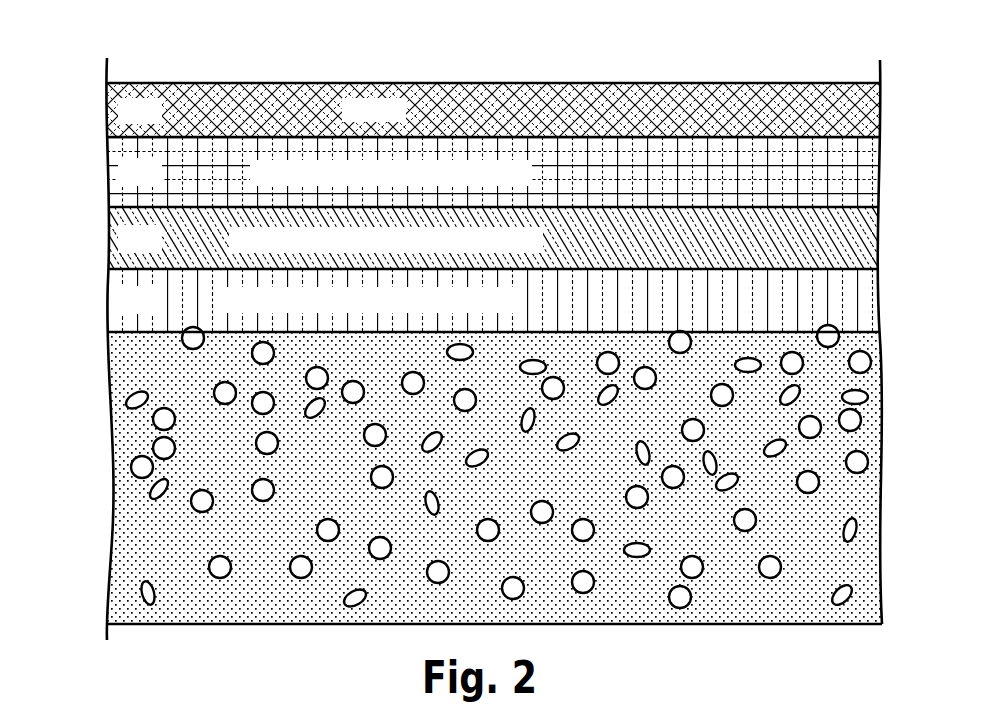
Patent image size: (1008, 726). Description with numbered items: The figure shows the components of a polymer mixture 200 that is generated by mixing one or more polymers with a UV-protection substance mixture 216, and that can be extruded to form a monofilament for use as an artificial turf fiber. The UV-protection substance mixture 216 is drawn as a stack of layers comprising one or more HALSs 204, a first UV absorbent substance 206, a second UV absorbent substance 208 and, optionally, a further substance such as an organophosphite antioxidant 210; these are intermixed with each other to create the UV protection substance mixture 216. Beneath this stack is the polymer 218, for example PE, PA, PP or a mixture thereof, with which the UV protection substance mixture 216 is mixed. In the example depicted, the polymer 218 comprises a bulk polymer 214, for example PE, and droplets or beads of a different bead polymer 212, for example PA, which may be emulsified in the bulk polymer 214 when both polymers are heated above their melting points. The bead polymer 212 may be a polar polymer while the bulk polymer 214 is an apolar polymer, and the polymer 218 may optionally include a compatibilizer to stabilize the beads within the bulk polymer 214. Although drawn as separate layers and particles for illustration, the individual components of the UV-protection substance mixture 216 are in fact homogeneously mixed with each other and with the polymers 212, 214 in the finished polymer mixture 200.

The polymer mixture 200 is at (460, 350).
The HALS 204 is at (157, 123).
The first UV absorbent substance 206 is at (157, 184).
The second UV absorbent substance 208 is at (157, 251).
The organophosphite antioxidant 210 is at (495, 300).
The bead polymer 212 is at (192, 620).
The bulk polymer 214 is at (262, 572).
The UV protection substance mixture 216 is at (460, 207).
The polymer 218 is at (460, 505).